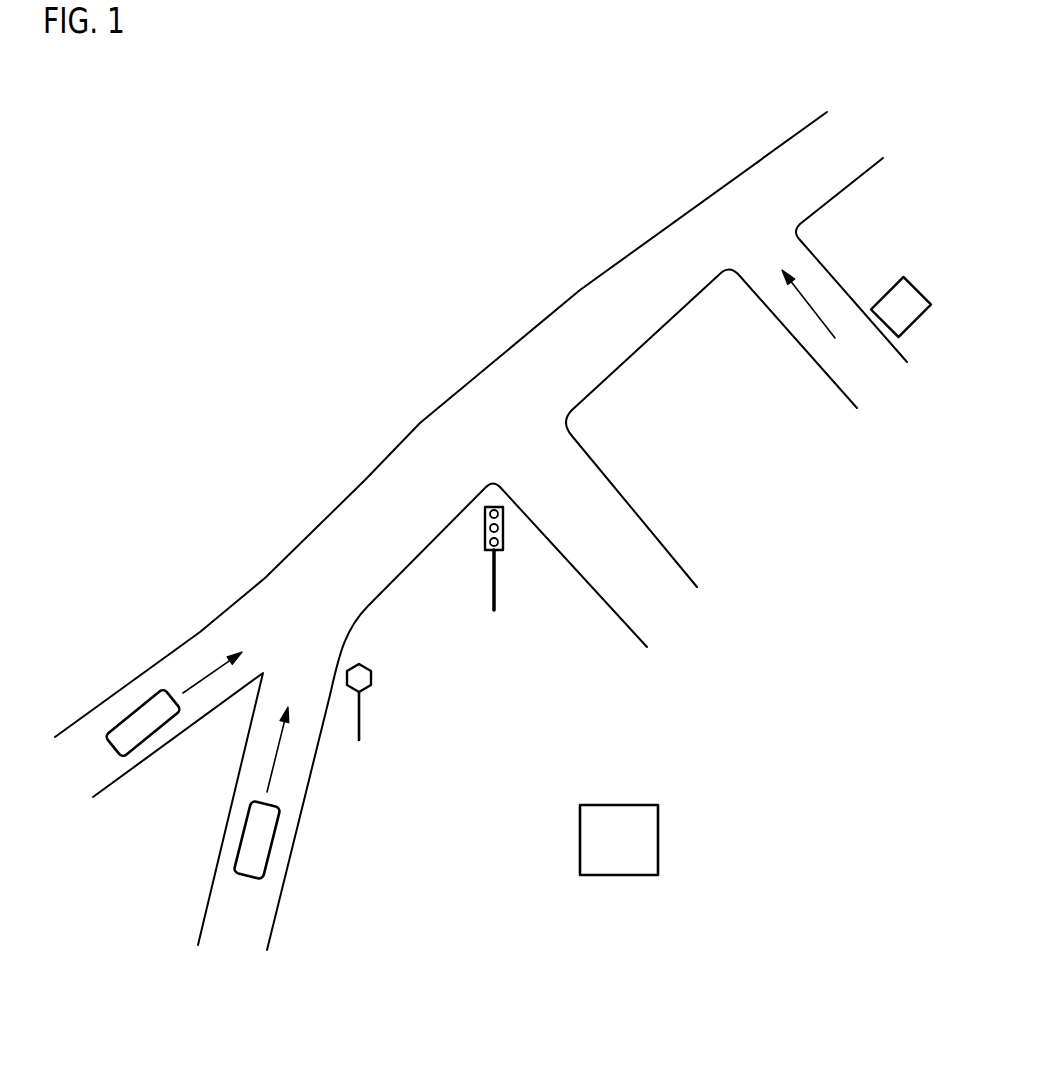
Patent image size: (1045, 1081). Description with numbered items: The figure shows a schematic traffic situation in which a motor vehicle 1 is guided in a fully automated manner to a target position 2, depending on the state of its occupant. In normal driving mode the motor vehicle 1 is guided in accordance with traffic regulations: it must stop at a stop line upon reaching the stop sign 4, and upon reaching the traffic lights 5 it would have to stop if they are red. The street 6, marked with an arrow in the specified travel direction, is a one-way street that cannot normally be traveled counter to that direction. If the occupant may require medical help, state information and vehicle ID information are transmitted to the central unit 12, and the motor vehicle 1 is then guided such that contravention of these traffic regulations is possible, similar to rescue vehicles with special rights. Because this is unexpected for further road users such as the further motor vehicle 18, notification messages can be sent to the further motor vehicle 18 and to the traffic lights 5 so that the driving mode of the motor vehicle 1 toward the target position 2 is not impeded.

The motor vehicle 1 is at (240, 837).
The target position 2 is at (887, 290).
The stop sign 4 is at (372, 675).
The traffic lights 5 is at (505, 528).
The street 6 is at (817, 317).
The central unit 12 is at (660, 837).
The further motor vehicle 18 is at (132, 708).